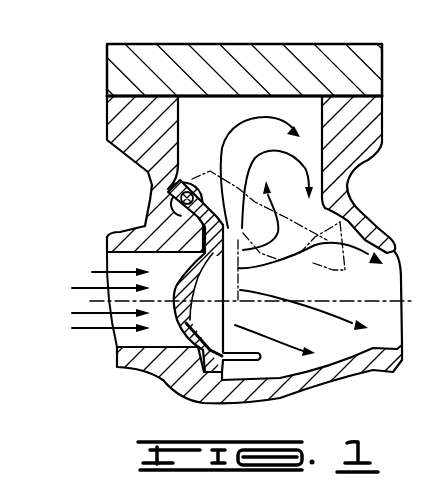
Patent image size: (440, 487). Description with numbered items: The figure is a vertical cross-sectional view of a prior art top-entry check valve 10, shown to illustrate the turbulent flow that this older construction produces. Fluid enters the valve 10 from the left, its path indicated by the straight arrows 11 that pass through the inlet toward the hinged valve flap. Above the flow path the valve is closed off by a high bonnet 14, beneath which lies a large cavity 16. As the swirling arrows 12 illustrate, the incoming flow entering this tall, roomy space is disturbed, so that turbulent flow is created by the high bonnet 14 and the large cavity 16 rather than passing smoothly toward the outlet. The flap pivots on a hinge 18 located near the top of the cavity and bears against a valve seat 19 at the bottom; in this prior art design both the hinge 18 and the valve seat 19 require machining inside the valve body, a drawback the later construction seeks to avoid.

The top-entry check valve 10 is at (104, 42).
The straight arrows 11 is at (99, 262).
The swirling arrows 12 is at (243, 118).
The high bonnet 14 is at (345, 44).
The large cavity 16 is at (197, 117).
The hinge 18 is at (180, 192).
The valve seat 19 is at (170, 382).